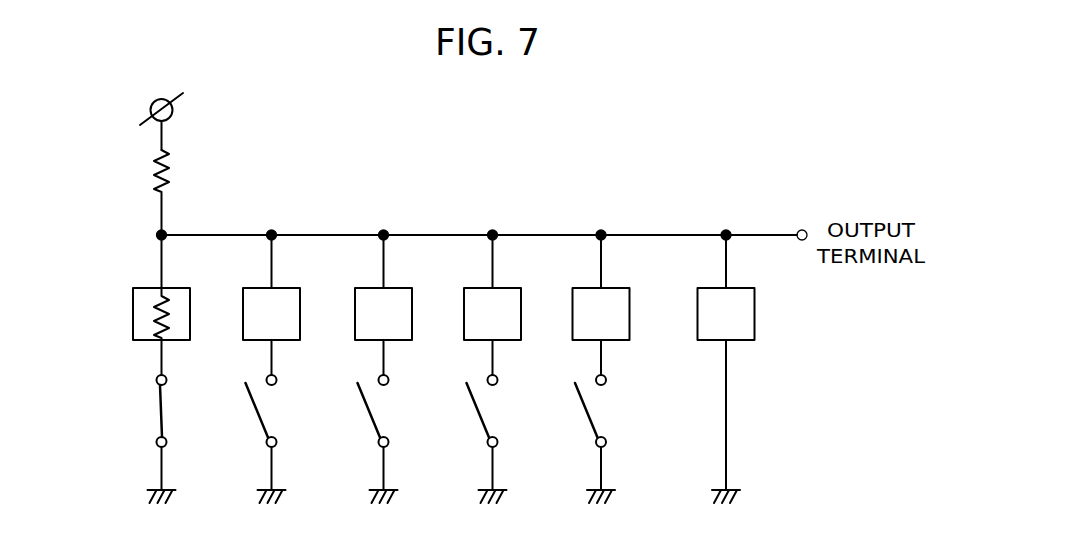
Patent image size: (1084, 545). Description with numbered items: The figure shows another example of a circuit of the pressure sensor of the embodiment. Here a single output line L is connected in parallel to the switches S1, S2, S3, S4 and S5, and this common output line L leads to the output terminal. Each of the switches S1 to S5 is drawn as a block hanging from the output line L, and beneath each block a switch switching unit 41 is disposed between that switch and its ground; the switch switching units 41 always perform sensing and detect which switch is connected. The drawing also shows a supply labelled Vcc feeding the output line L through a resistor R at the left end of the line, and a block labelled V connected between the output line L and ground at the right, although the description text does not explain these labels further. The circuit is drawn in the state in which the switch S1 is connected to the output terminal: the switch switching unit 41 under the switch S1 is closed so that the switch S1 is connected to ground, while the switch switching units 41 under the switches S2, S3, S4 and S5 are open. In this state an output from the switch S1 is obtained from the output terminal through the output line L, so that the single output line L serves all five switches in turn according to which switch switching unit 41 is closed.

The power supply Vcc is at (161, 109).
The resistor R is at (156, 166).
The output line L is at (538, 235).
The switch S1 is at (133, 328).
The switch S2 is at (243, 328).
The switch S3 is at (355, 328).
The switch S4 is at (464, 328).
The switch S5 is at (572, 328).
The voltmeter V is at (726, 386).
The switch switching unit 41 is at (239, 437).